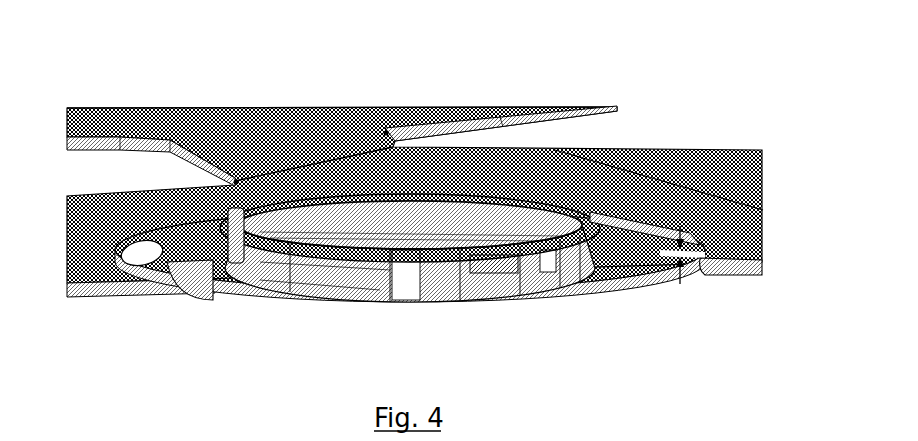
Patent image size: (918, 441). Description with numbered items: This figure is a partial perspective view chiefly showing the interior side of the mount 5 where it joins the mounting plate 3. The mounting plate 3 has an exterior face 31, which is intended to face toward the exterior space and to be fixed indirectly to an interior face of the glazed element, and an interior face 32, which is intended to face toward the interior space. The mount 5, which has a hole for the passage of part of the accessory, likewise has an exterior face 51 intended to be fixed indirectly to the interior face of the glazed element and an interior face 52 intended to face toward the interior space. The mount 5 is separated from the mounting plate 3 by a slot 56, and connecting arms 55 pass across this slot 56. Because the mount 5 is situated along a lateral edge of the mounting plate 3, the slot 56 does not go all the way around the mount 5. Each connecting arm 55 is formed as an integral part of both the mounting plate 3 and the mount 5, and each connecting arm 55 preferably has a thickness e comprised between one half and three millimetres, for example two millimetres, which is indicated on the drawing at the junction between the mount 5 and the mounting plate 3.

The mounting plate 3 is at (136, 102).
The interior face 32 is at (293, 137).
The exterior face 31 is at (122, 298).
The mount 5 is at (505, 324).
The exterior face 51 is at (323, 303).
The interior face 52 is at (212, 261).
The connecting arm 55 is at (170, 293).
The slot 56 is at (142, 249).
The thickness e is at (687, 255).